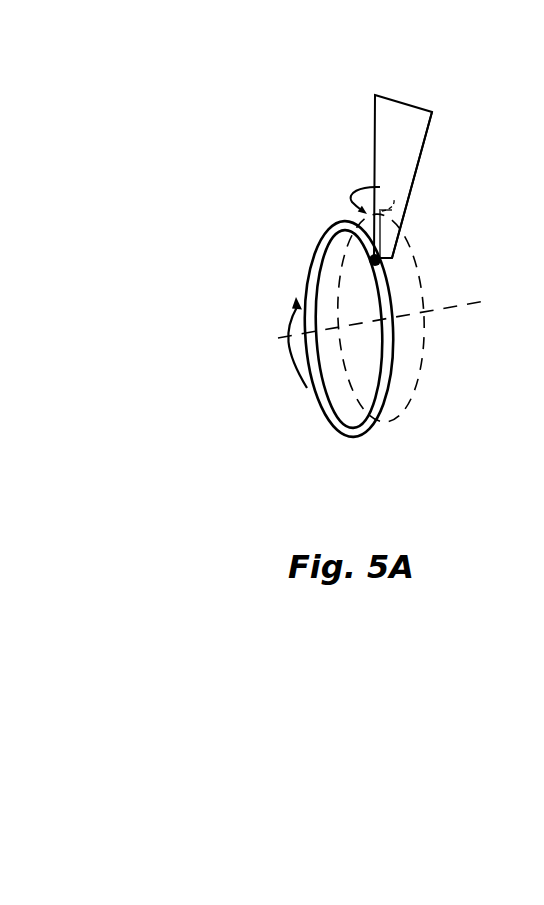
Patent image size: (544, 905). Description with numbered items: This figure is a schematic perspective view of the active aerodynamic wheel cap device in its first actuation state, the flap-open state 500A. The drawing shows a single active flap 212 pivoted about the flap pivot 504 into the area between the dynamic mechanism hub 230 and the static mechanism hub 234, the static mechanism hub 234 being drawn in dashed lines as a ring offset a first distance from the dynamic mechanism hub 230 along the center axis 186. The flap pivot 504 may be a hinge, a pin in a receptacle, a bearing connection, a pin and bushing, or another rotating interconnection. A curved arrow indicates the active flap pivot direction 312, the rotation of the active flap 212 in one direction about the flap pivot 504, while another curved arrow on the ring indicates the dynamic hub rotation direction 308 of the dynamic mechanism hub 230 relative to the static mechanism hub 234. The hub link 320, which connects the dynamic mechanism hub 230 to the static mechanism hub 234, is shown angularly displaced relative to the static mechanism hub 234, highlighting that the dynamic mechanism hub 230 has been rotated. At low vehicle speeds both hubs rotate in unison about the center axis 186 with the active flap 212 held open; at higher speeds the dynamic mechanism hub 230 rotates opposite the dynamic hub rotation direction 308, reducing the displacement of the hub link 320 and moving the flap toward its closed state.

The flap-open state 500A is at (232, 147).
The active flap 212 is at (430, 148).
The active flap pivot direction 312 is at (350, 180).
The flap pivot 504 is at (360, 253).
The hub link 320 is at (407, 236).
The center axis 186 is at (280, 342).
The dynamic hub rotation direction 308 is at (292, 368).
The dynamic mechanism hub 230 is at (320, 427).
The static mechanism hub 234 is at (420, 405).